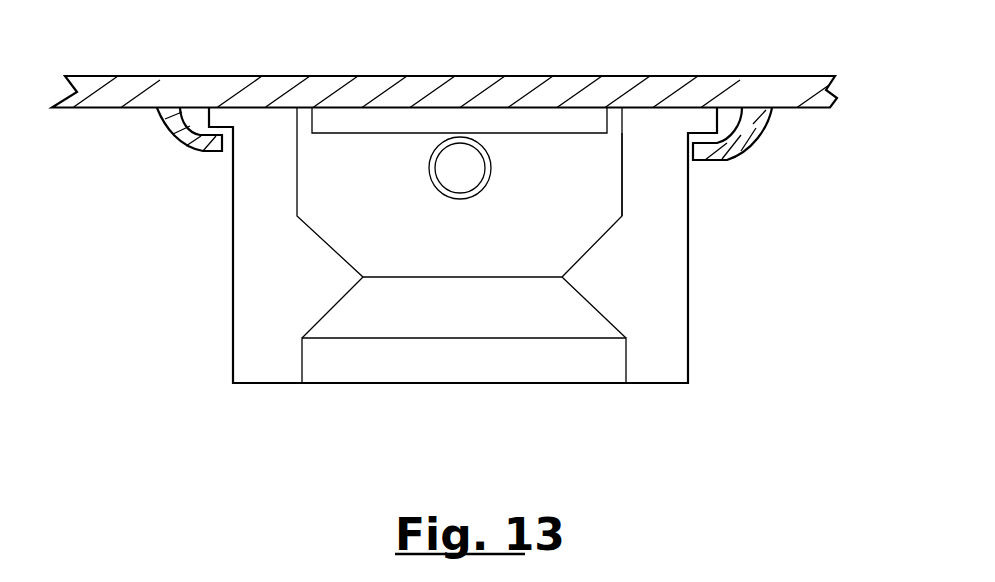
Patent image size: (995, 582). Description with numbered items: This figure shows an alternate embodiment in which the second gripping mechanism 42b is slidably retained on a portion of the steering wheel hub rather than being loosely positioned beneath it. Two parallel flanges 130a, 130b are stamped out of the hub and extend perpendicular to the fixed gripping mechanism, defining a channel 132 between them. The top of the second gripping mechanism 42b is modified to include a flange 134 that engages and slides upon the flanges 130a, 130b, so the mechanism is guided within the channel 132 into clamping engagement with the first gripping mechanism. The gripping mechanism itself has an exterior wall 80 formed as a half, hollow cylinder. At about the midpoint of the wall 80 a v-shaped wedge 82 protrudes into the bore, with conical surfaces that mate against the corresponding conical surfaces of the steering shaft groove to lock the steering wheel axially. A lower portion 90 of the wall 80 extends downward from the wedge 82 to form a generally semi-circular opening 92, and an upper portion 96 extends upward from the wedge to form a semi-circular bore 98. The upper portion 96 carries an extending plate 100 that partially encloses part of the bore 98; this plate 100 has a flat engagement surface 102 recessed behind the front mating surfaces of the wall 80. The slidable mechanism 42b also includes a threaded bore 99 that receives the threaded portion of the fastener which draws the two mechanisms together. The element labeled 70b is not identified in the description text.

The second gripping mechanism 42b is at (708, 325).
The base 70b is at (302, 387).
The exterior wall 80 is at (255, 282).
The v-shaped wedge 82 is at (568, 275).
The lower portion 90 is at (675, 338).
The semi-circular opening 92 is at (627, 363).
The upper portion 96 is at (668, 127).
The semi-circular bore 98 is at (300, 178).
The threaded bore 99 is at (487, 170).
The extending plate 100 is at (548, 120).
The flat engagement surface 102 is at (410, 118).
The flange 130a is at (200, 152).
The flange 130b is at (757, 146).
The channel 132 is at (200, 117).
The flange 134 is at (242, 110).